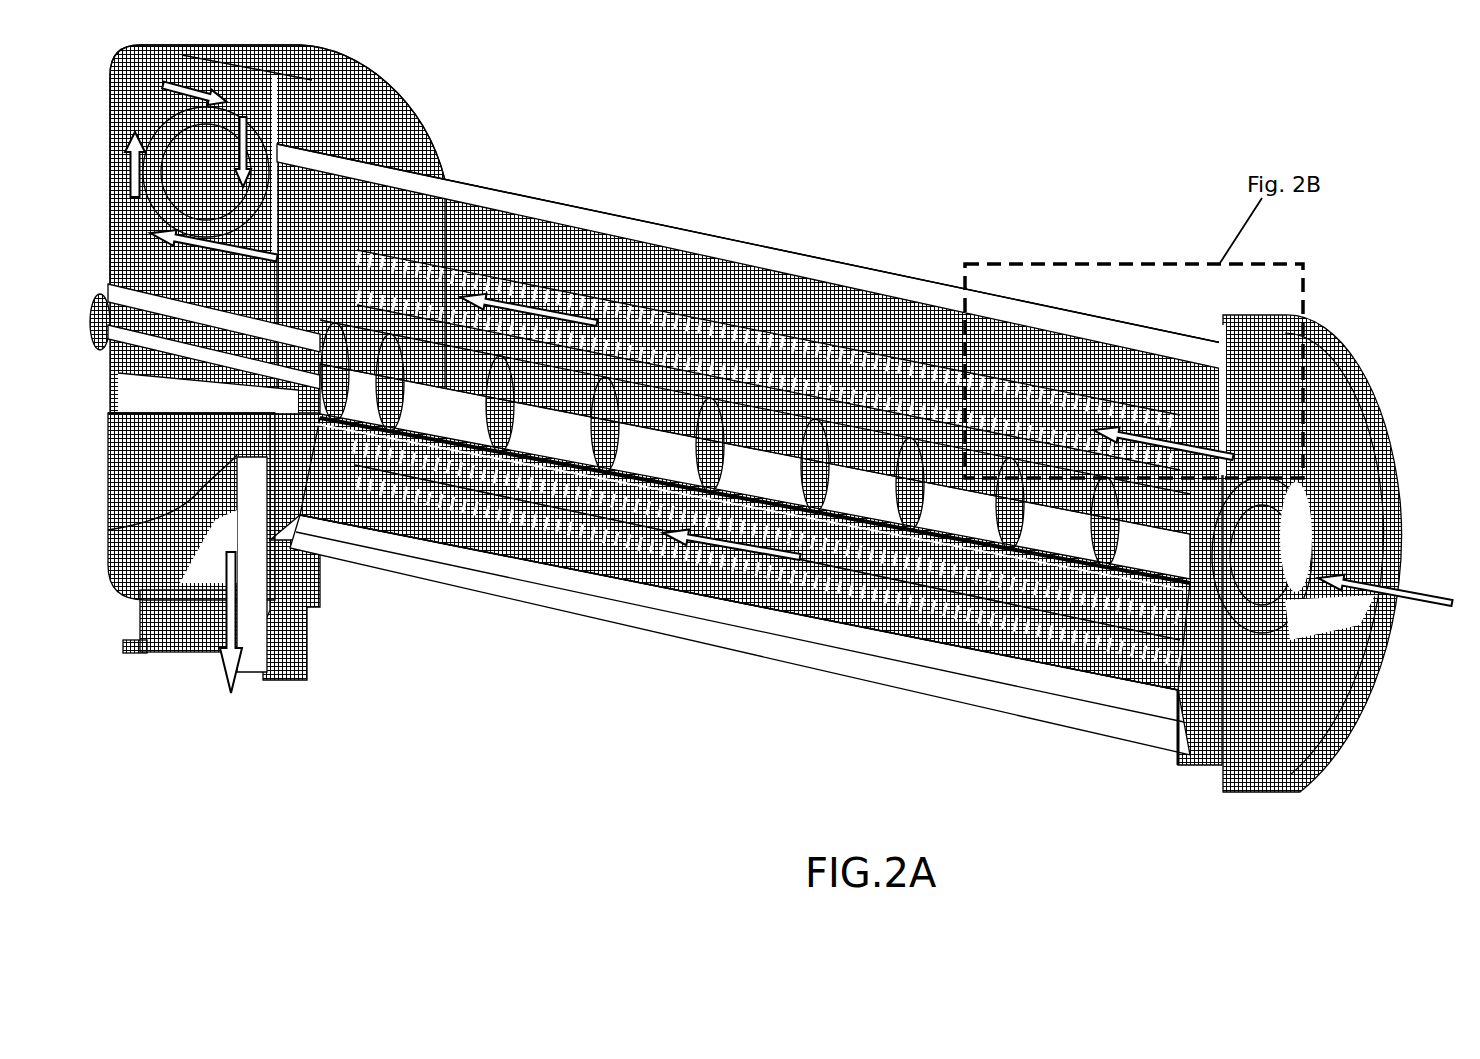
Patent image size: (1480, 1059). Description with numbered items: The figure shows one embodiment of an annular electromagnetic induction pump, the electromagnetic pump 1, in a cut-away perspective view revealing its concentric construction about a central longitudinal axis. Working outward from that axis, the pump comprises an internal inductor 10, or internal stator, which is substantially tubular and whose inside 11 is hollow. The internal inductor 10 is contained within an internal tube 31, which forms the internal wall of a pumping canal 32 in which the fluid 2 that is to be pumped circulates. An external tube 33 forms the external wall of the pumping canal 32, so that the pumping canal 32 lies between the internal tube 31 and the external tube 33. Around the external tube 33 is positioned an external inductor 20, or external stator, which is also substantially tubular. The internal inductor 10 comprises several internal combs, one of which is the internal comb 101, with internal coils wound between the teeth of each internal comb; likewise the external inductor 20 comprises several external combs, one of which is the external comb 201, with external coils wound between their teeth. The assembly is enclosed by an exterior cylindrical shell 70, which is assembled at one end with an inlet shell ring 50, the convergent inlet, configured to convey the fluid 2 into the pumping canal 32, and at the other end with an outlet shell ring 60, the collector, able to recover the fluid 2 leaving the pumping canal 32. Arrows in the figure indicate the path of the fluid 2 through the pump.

The electromagnetic pump 1 is at (762, 194).
The fluid 2 is at (463, 298).
The internal inductor 10 is at (1007, 583).
The inside of the internal inductor 11 is at (877, 491).
The external inductor 20 is at (540, 528).
The internal tube 31 is at (907, 570).
The pumping canal 32 is at (807, 560).
The external tube 33 is at (627, 527).
The inlet shell ring 50 is at (1288, 593).
The outlet shell ring 60 is at (233, 497).
The exterior cylindrical shell 70 is at (833, 263).
The internal comb 101 is at (1163, 463).
The external comb 201 is at (1157, 427).